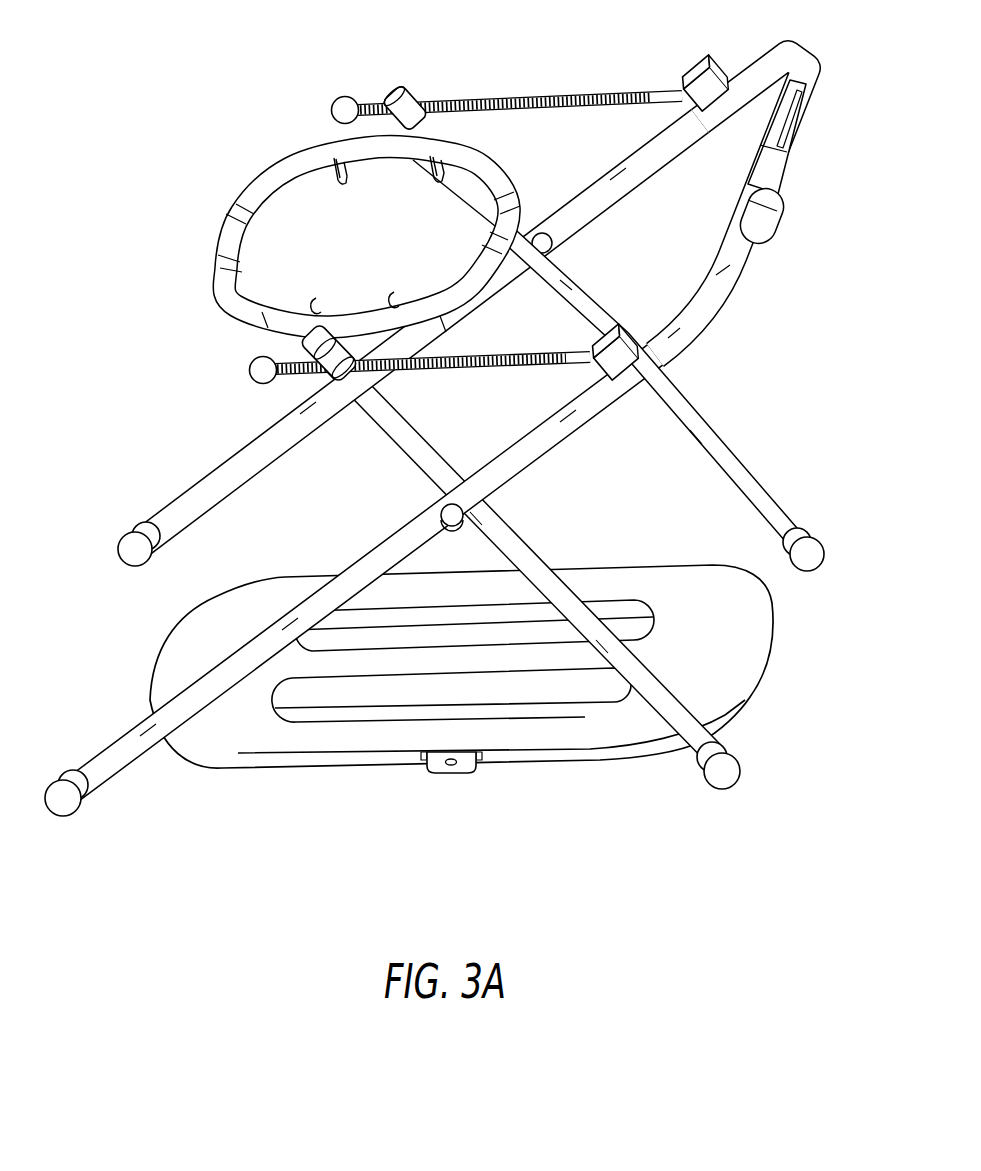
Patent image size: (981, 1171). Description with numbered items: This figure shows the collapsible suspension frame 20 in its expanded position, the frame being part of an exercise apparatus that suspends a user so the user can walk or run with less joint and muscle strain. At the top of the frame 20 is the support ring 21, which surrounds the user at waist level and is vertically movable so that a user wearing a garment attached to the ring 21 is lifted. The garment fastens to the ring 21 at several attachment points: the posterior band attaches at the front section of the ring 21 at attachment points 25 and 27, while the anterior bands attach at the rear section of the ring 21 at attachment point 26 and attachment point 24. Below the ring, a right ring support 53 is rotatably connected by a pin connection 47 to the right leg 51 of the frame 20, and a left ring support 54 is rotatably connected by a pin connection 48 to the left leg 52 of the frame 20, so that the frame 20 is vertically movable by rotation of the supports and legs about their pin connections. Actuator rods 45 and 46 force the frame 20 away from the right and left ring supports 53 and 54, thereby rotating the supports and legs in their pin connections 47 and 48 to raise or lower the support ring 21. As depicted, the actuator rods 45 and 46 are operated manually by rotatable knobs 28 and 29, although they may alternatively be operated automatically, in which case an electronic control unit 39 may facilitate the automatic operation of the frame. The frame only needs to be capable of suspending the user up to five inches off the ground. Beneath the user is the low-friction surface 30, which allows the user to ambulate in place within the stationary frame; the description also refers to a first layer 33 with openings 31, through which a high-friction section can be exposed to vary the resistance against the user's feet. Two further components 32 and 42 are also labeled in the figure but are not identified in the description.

The frame 20 is at (425, 435).
The support ring 21 is at (270, 192).
The attachment point 24 is at (340, 185).
The attachment point 25 is at (433, 183).
The attachment point 26 is at (318, 304).
The attachment point 27 is at (390, 292).
The rotatable knob 28 is at (263, 384).
The rotatable knob 29 is at (345, 96).
The low-friction surface 30 is at (495, 715).
The openings 31 is at (578, 707).
The bracket 32 is at (458, 774).
The first layer 33 is at (257, 730).
The electronic control unit 39 is at (806, 134).
The clamp 42 is at (572, 297).
The actuator rod 45 is at (470, 372).
The actuator rod 46 is at (529, 92).
The pin connection 47 is at (460, 524).
The pin connection 48 is at (532, 232).
The right leg 51 is at (120, 745).
The left leg 52 is at (202, 490).
The right ring support 53 is at (660, 692).
The left ring support 54 is at (756, 493).